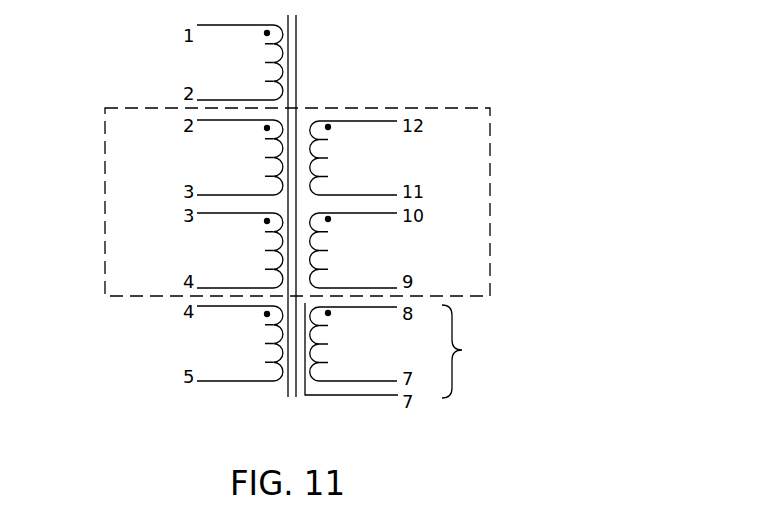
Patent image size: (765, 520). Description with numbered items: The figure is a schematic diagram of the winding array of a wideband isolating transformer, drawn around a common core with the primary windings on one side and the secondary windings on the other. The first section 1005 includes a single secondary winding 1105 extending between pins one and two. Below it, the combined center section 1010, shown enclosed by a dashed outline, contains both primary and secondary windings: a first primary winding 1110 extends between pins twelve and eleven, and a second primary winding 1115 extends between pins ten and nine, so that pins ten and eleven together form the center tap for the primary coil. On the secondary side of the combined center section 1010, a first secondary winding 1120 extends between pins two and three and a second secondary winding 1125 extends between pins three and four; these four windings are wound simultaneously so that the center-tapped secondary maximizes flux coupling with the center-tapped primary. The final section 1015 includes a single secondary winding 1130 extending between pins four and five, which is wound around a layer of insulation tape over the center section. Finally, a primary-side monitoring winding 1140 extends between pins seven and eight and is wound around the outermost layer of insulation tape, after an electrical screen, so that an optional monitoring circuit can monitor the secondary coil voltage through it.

The first section 1005 is at (174, 58).
The secondary winding 1105 is at (280, 60).
The combined center section 1010 is at (490, 143).
The first secondary winding 1120 is at (260, 157).
The first primary winding 1110 is at (333, 157).
The second secondary winding 1125 is at (260, 249).
The second primary winding 1115 is at (333, 249).
The final section 1015 is at (150, 338).
The secondary winding 1130 is at (260, 346).
The monitoring winding 1140 is at (333, 347).